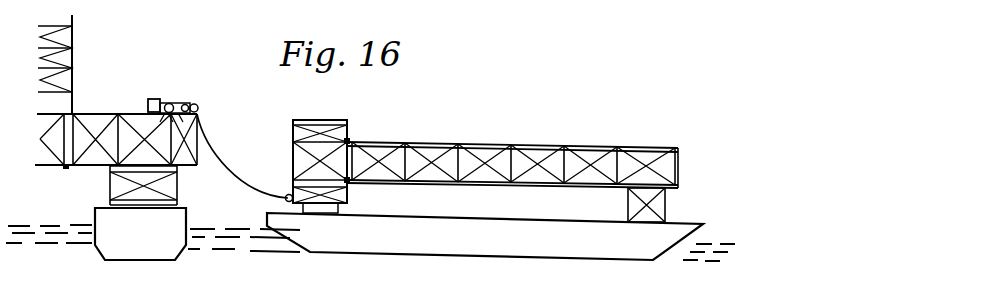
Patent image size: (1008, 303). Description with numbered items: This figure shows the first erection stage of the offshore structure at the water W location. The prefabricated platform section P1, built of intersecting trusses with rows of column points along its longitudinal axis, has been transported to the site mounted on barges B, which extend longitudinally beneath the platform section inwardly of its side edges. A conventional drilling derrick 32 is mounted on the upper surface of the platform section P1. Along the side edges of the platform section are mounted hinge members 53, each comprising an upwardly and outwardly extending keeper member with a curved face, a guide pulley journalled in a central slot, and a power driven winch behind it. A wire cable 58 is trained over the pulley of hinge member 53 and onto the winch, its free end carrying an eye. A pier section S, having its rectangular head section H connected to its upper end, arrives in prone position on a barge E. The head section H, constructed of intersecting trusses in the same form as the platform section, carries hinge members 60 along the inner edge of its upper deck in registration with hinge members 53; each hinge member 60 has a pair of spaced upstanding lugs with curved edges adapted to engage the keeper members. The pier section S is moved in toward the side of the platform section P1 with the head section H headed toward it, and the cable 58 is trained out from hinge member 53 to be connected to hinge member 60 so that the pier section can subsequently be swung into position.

The drilling derrick 32 is at (74, 52).
The platform section P1 is at (104, 110).
The hinge member 53 is at (194, 99).
The wire cable 58 is at (226, 165).
The hinge member 60 is at (286, 196).
The head section H is at (334, 119).
The pier section S is at (530, 145).
The barge E is at (480, 250).
The barge B is at (123, 248).
The water W is at (60, 226).